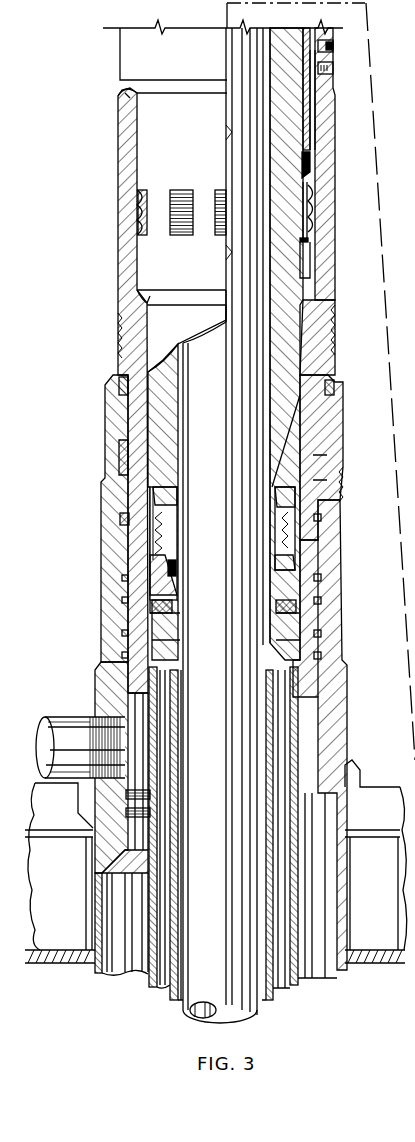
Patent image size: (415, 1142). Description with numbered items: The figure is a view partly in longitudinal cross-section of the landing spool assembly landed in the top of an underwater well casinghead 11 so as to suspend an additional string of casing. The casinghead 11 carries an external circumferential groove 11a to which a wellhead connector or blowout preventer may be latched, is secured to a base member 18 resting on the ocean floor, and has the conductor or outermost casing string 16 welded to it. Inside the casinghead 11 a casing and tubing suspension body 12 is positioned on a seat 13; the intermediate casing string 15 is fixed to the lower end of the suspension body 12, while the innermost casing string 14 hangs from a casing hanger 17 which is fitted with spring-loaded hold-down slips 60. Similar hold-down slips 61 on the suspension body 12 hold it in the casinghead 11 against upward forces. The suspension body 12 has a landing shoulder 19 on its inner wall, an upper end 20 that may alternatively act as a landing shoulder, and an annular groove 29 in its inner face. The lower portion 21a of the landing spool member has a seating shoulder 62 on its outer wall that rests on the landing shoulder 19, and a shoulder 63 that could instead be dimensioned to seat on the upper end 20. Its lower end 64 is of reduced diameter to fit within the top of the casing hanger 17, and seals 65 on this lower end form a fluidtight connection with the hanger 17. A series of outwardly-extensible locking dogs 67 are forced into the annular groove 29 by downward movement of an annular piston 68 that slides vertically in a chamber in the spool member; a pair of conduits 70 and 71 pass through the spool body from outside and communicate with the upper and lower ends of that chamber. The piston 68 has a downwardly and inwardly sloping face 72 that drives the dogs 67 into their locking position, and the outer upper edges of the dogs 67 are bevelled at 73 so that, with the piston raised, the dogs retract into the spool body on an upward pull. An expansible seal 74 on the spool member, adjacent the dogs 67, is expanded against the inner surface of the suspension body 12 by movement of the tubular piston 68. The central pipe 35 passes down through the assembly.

The underwater casinghead 11 is at (340, 722).
The external circumferential groove 11a is at (340, 488).
The casing and tubing suspension body 12 is at (122, 405).
The seat 13 is at (121, 594).
The innermost casing string 14 is at (171, 1000).
The intermediate casing string 15 is at (150, 985).
The outermost casing string 16 is at (95, 975).
The casing hanger 17 is at (152, 604).
The base member 18 is at (72, 908).
The landing shoulder 19 is at (145, 303).
The upper end of suspension body 20 is at (120, 105).
The lower portion of landing spool member 21a is at (162, 148).
The annular groove 29 is at (138, 228).
The central pipe 35 is at (255, 1005).
The spring-loaded hold-down slips 60 is at (150, 578).
The hold-down slips 61 is at (120, 478).
The seating shoulder 62 is at (153, 287).
The shoulder 63 is at (125, 89).
The lower end of spool member 64 is at (173, 517).
The seals 65 is at (177, 567).
The locking dogs 67 is at (316, 212).
The annular piston 68 is at (303, 135).
The conduit 70 is at (334, 46).
The conduit 71 is at (334, 72).
The sloping face 72 is at (306, 252).
The bevel 73 is at (310, 192).
The expansible seal 74 is at (312, 165).